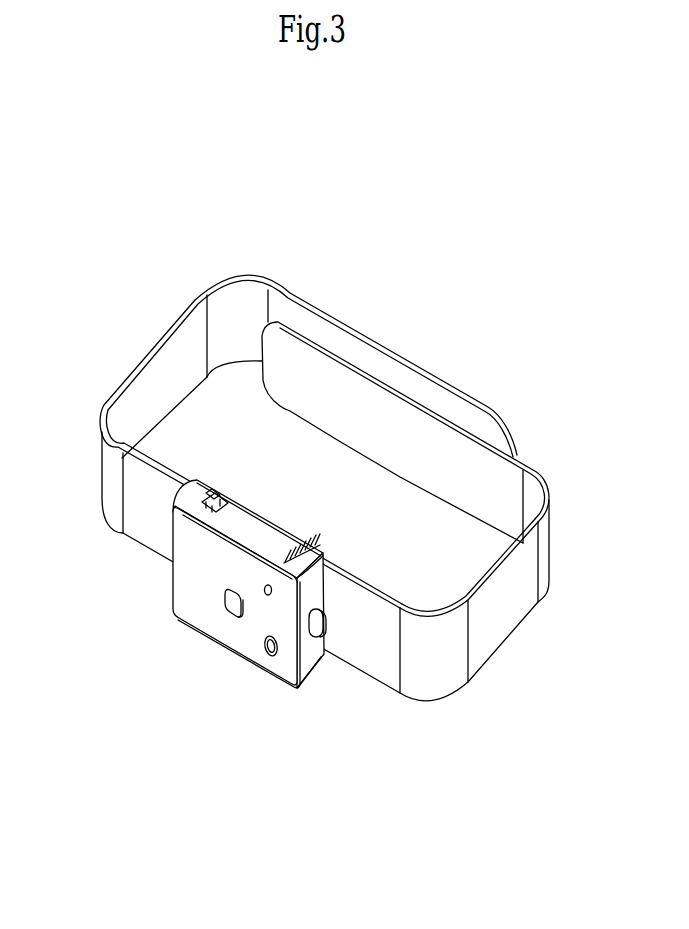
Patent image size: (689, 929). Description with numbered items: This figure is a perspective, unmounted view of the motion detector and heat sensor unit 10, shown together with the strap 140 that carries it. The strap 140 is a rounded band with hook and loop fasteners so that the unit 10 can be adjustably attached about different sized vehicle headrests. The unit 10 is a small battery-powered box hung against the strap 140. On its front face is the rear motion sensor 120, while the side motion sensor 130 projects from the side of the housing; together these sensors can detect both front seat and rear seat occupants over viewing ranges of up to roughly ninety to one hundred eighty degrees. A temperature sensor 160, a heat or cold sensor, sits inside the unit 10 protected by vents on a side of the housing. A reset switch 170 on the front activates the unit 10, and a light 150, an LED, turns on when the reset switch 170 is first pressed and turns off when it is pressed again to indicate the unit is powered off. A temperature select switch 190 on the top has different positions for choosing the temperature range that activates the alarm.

The motion detector and heat sensor unit 10 is at (195, 598).
The rear motion sensor 120 is at (233, 617).
The side motion sensor 130 is at (326, 652).
The strap 140 is at (160, 378).
The light 150 is at (268, 585).
The temperature sensor 160 is at (302, 542).
The reset switch 170 is at (270, 657).
The temperature select switch 190 is at (212, 498).